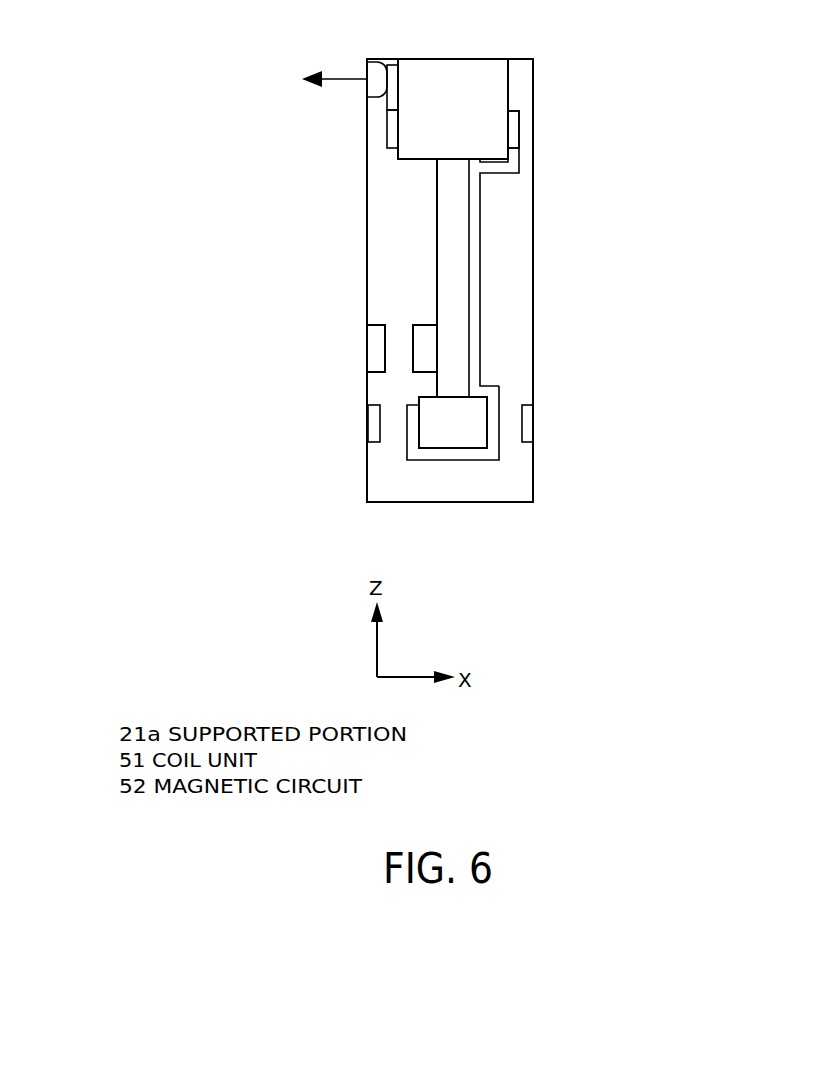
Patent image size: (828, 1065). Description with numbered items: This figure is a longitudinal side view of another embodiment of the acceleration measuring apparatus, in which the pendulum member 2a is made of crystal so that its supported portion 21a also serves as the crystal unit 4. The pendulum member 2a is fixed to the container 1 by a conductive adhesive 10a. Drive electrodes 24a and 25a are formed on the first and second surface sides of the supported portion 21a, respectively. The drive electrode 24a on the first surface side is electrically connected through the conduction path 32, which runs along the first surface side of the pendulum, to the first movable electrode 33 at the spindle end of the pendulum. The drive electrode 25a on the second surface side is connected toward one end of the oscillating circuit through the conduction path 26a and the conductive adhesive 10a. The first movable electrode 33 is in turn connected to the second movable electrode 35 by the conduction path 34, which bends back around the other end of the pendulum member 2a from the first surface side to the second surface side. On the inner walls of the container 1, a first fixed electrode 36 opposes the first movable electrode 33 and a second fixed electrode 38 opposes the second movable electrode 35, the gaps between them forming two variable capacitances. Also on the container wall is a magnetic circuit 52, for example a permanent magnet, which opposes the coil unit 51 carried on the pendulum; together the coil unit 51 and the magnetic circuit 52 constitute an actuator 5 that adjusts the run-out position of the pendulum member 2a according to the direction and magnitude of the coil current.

The container 1 is at (534, 263).
The pendulum member 2a is at (455, 76).
The supported portion 21a is at (482, 66).
The conduction path 26a is at (395, 67).
The drive electrode 25a is at (387, 130).
The drive electrode 24a is at (519, 133).
The crystal unit 4 is at (538, 103).
The conductive adhesive 10a is at (367, 66).
The conduction path 32 is at (481, 196).
The first movable electrode 33 is at (500, 433).
The conduction path 34 is at (453, 462).
The second movable electrode 35 is at (407, 435).
The first fixed electrode 36 is at (526, 405).
The second fixed electrode 38 is at (372, 404).
The actuator 5 is at (310, 292).
The coil unit 51 is at (423, 325).
The magnetic circuit 52 is at (375, 350).